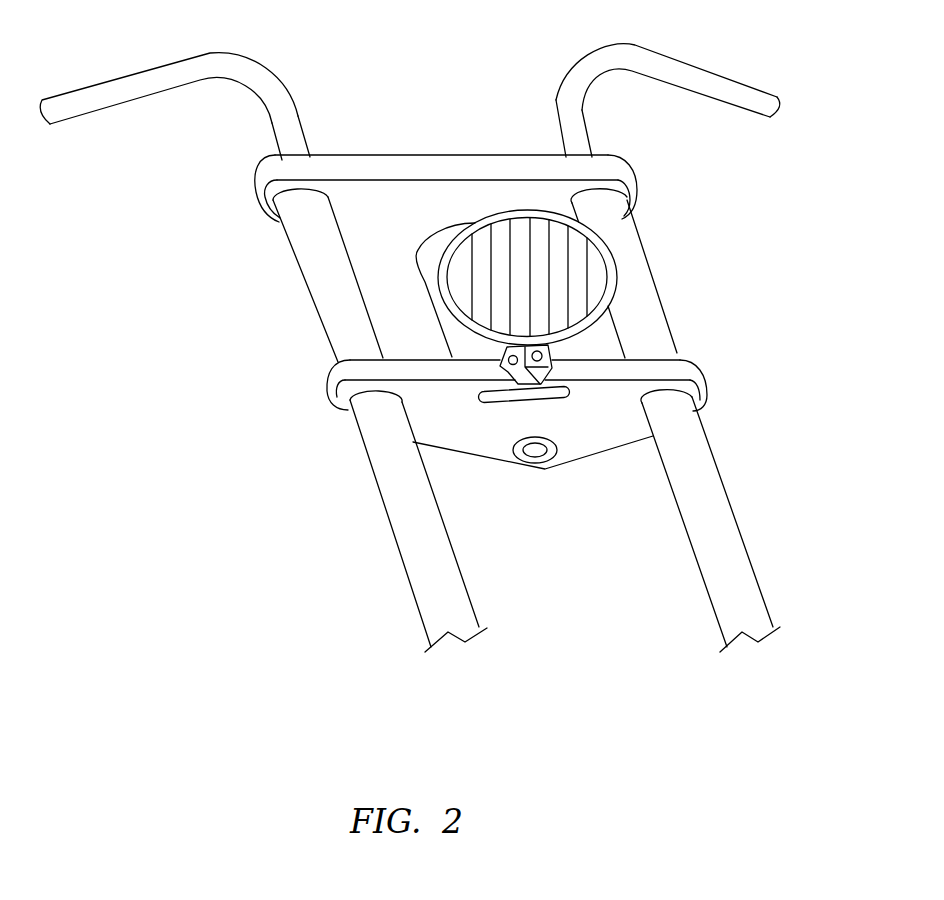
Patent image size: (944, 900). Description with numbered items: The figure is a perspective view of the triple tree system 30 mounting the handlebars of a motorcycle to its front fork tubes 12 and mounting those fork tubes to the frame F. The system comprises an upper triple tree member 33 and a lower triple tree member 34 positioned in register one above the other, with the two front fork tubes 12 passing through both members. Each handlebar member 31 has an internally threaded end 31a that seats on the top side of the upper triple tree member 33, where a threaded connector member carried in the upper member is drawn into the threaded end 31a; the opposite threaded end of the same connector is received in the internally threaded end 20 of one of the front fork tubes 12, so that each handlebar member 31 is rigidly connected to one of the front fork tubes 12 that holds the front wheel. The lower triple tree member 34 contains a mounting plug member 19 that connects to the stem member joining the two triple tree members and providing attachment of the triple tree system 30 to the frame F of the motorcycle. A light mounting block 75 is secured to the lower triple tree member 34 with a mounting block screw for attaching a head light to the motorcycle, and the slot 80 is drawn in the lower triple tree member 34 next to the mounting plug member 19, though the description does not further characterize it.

The triple tree system 30 is at (200, 423).
The handlebar member 31 is at (153, 63).
The internally threaded end of handlebar member 31a is at (263, 137).
The upper triple tree member 33 is at (257, 172).
The internally threaded end of front fork tube 20 is at (297, 212).
The front fork tube 12 is at (312, 307).
The lower triple tree member 34 is at (327, 372).
The frame F is at (415, 253).
The light mounting block 75 is at (541, 380).
The slot 80 is at (520, 400).
The mounting plug member 19 is at (537, 450).